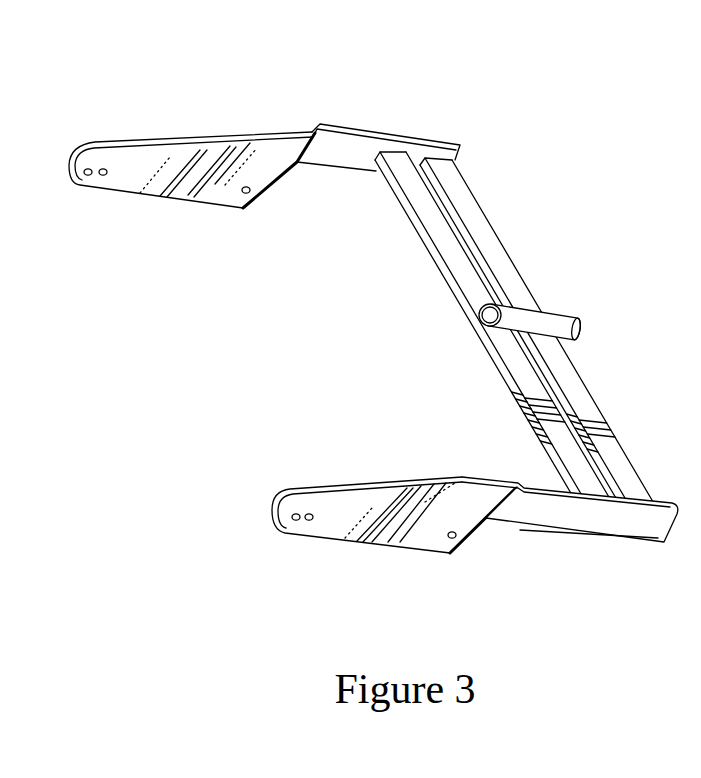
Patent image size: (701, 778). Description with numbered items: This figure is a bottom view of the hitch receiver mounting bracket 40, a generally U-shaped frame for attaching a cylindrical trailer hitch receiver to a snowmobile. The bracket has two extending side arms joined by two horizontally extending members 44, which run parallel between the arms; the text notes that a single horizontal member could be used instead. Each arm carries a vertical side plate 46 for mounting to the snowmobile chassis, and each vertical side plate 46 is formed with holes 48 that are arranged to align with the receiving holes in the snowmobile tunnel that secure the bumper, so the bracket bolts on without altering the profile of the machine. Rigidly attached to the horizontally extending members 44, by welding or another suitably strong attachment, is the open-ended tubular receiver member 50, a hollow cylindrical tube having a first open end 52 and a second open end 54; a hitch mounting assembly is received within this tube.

The hitch receiver mounting bracket 40 is at (229, 90).
The horizontally extending members 44 is at (445, 233).
The vertical side plates 46 is at (143, 167).
The holes 48 is at (243, 193).
The tubular receiver member 50 is at (552, 323).
The first open end 52 is at (585, 333).
The second open end 54 is at (486, 315).